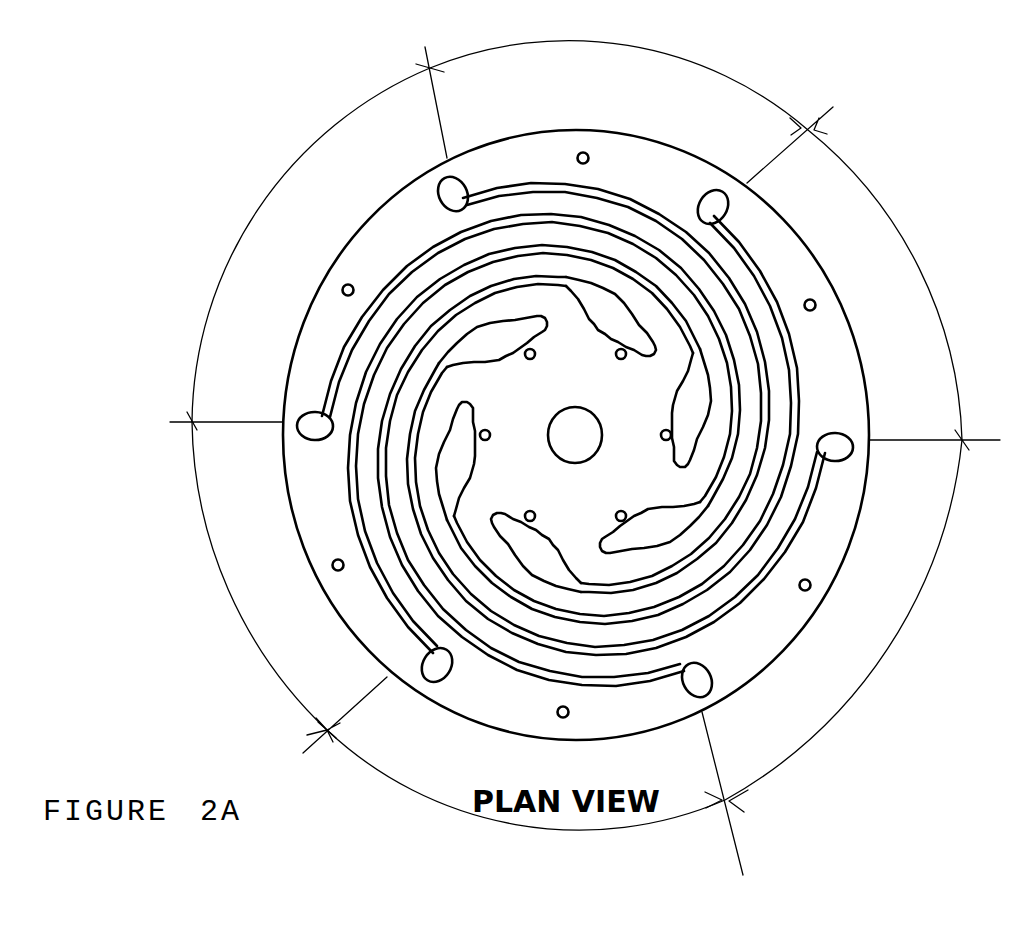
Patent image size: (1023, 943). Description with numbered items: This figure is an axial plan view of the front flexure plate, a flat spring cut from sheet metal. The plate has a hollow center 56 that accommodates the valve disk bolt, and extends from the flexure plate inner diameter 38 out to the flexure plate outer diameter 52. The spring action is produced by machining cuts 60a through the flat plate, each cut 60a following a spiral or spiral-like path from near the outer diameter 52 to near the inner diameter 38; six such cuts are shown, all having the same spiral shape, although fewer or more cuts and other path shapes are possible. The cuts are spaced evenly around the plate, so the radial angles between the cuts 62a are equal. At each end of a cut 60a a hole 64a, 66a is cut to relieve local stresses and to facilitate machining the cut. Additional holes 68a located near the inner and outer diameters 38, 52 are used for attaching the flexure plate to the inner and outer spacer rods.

The flexure plate inner diameter 38 is at (546, 440).
The flexure plate outer diameter 52 is at (297, 533).
The hollow center 56 is at (586, 433).
The cut 60a is at (668, 213).
The radial angle between cuts 62a is at (754, 88).
The hole 64a is at (457, 178).
The hole 66a is at (544, 320).
The holes 68a is at (584, 151).